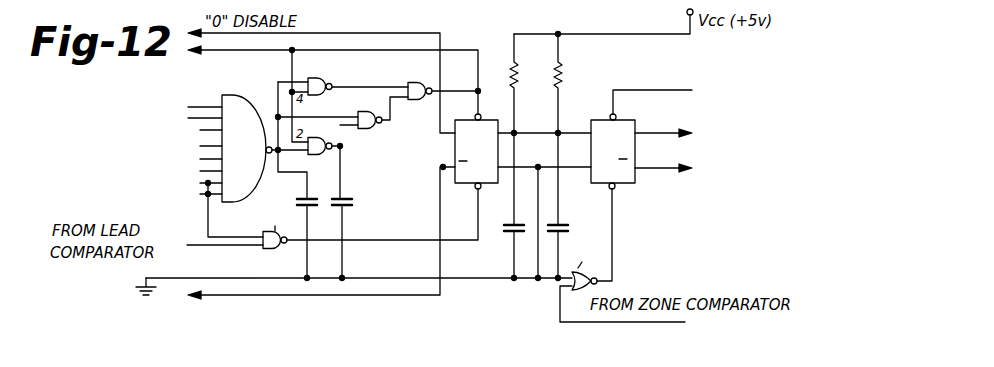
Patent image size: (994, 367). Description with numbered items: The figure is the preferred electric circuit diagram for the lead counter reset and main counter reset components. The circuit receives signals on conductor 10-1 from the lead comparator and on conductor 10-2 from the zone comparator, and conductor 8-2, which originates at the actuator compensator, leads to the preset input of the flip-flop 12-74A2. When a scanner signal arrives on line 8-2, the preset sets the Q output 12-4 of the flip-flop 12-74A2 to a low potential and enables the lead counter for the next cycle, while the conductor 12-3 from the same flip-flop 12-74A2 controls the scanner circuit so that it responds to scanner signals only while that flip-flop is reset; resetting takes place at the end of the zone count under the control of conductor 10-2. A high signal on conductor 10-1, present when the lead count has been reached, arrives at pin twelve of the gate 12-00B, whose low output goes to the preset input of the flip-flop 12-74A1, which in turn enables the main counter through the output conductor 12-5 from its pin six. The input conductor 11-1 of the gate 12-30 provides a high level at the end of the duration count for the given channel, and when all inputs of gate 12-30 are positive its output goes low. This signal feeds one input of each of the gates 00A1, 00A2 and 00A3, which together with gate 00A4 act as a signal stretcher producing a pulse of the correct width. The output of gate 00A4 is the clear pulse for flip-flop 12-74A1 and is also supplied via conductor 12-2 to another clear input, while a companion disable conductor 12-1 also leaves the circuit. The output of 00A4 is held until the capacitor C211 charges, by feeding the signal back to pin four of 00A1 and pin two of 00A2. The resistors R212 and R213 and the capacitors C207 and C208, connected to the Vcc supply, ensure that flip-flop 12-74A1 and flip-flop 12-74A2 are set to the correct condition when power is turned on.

The zero disable conductor 12-1 is at (357, 36).
The conductor to clear input 12-2 is at (452, 50).
The scanner control conductor 12-3 is at (660, 130).
The Q output conductor 12-4 is at (661, 168).
The main counter enable conductor 12-5 is at (246, 296).
The gate 12-30 is at (248, 80).
The input conductor 11-1 is at (190, 104).
The gate 12-00B is at (350, 219).
The conductor from lead comparator 10-1 is at (203, 249).
The conductor from zone comparator 10-2 is at (556, 305).
The flip-flop 12-74A1 is at (452, 140).
The flip-flop 12-74A2 is at (640, 183).
The conductor to preset input 8-2 is at (656, 90).
The gate 00A1 is at (322, 80).
The gate 00A2 is at (305, 157).
The gate 00A3 is at (366, 133).
The gate 00A4 is at (418, 103).
The resistor R212 is at (564, 72).
The resistor R213 is at (530, 80).
The capacitor C207 is at (561, 223).
The capacitor C208 is at (512, 229).
The capacitor C211 is at (345, 204).